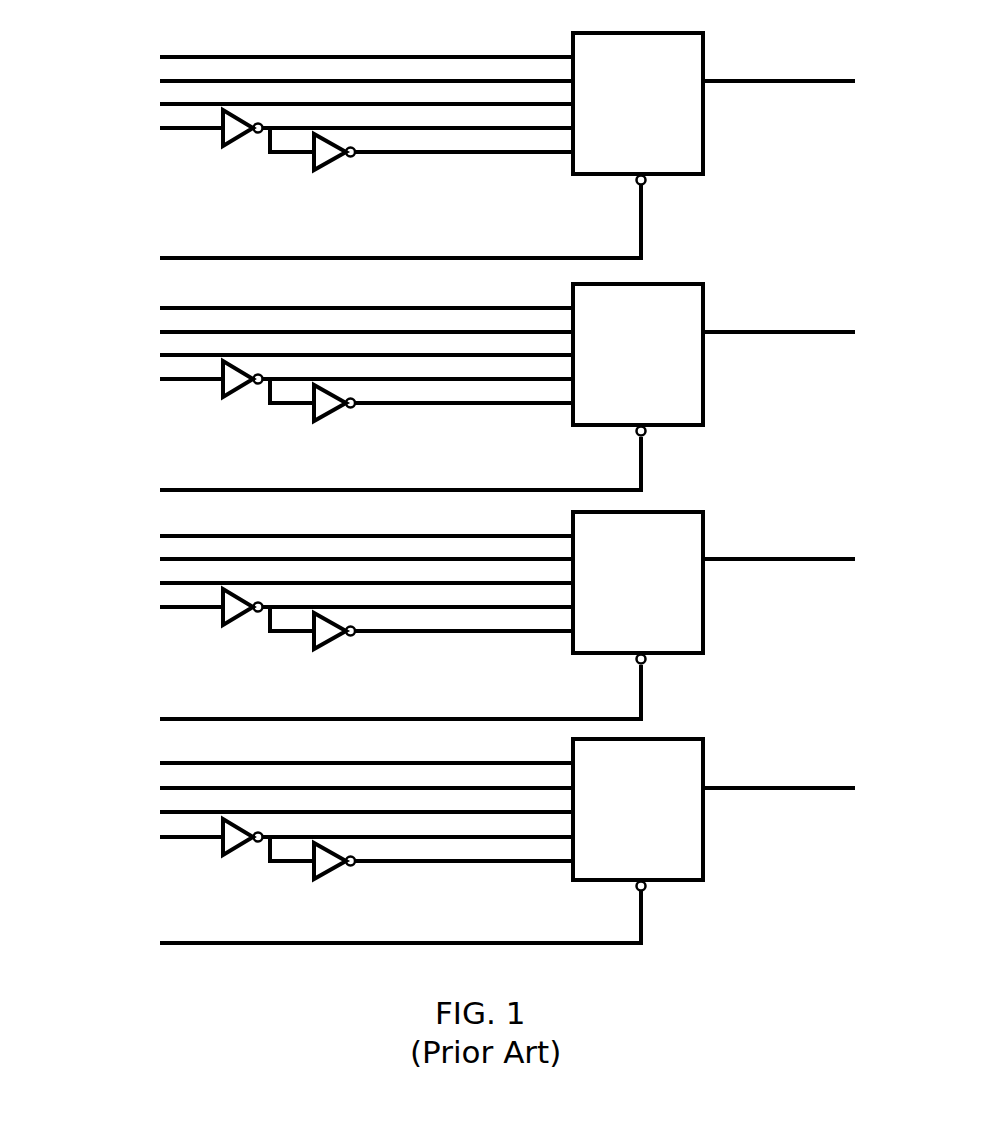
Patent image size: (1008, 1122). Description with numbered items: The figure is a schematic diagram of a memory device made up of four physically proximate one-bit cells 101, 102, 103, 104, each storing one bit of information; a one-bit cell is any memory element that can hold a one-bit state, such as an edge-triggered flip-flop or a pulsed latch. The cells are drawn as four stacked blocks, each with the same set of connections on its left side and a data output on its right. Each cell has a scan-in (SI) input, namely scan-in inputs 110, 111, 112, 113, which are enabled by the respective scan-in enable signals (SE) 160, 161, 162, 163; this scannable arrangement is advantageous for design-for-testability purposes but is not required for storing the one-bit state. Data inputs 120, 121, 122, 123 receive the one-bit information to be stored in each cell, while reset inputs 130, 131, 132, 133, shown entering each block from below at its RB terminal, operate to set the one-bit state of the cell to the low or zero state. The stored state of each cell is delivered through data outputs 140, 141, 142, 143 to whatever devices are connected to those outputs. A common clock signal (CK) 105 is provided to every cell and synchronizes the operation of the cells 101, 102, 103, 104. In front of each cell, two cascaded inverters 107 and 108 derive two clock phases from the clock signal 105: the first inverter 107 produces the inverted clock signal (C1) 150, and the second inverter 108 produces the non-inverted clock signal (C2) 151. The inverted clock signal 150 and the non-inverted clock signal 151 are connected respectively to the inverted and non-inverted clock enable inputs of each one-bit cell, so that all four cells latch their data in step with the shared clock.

The one-bit cell 101 is at (638, 104).
The one-bit cell 102 is at (638, 355).
The one-bit cell 103 is at (638, 583).
The one-bit cell 104 is at (638, 810).
The clock signal 105 is at (122, 135).
The inverter 107 is at (236, 150).
The inverter 108 is at (327, 172).
The scan-in input 110 is at (112, 58).
The scan-in input 111 is at (112, 303).
The scan-in input 112 is at (120, 535).
The scan-in input 113 is at (112, 769).
The data input 120 is at (120, 84).
The data input 121 is at (123, 340).
The data input 122 is at (127, 560).
The data input 123 is at (125, 788).
The reset input 130 is at (102, 257).
The reset input 131 is at (105, 485).
The reset input 132 is at (105, 713).
The reset input 133 is at (100, 940).
The data output 140 is at (873, 58).
The data output 141 is at (873, 310).
The data output 142 is at (873, 537).
The data output 143 is at (873, 764).
The inverted clock signal 150 is at (420, 130).
The non-inverted clock signal 151 is at (397, 162).
The scan-in enable signal 160 is at (125, 103).
The scan-in enable signal 161 is at (122, 357).
The scan-in enable signal 162 is at (128, 583).
The scan-in enable signal 163 is at (128, 810).